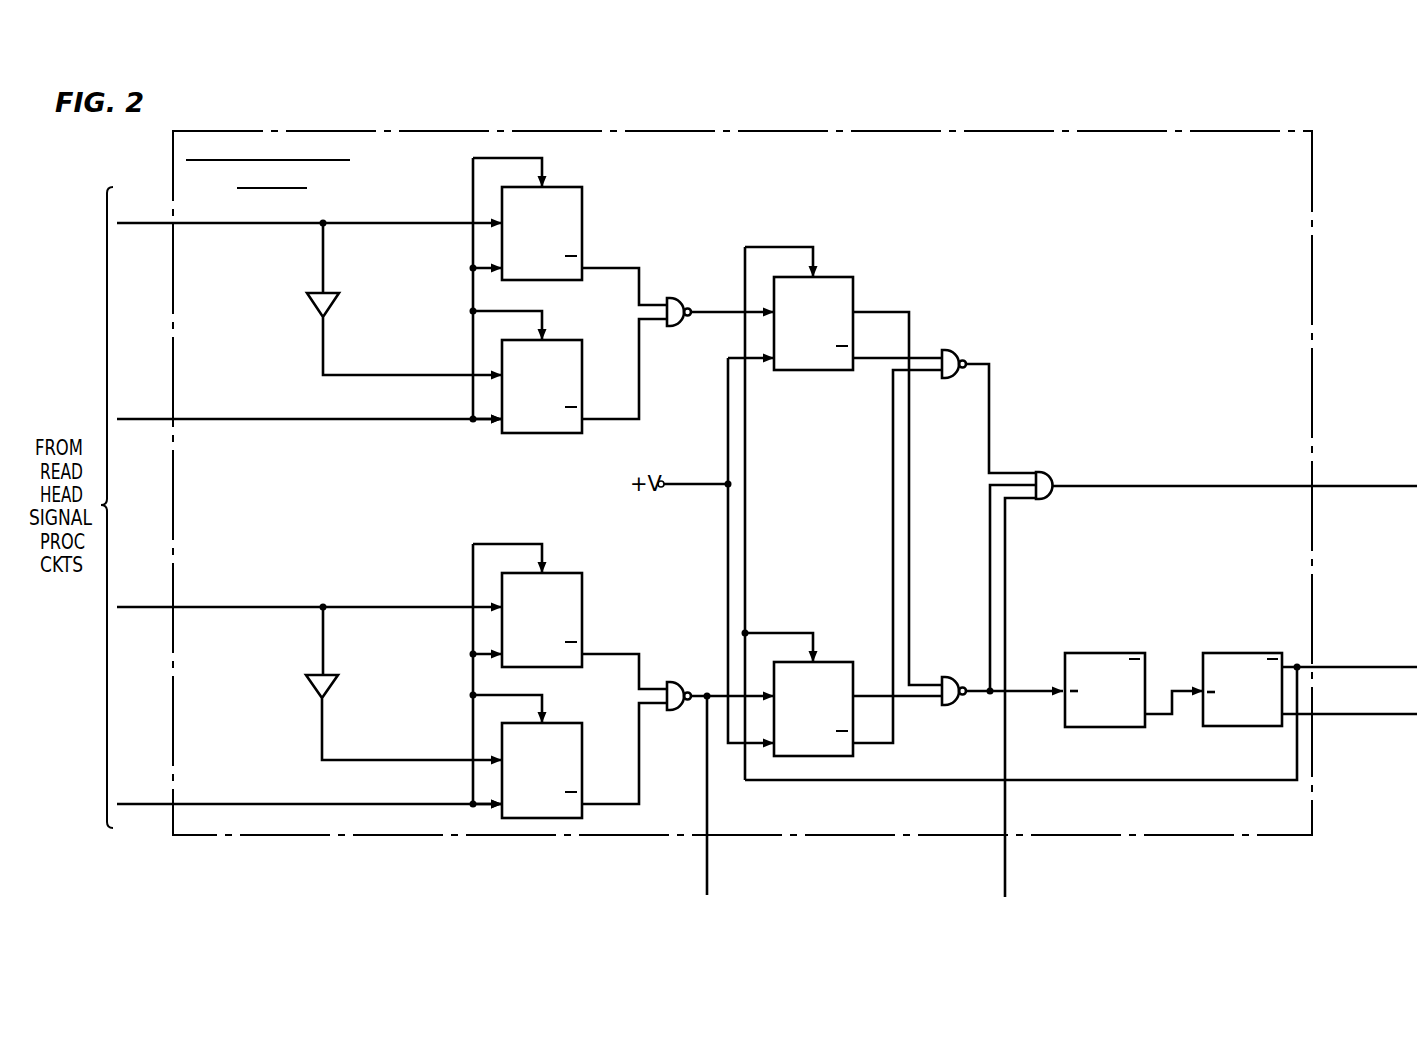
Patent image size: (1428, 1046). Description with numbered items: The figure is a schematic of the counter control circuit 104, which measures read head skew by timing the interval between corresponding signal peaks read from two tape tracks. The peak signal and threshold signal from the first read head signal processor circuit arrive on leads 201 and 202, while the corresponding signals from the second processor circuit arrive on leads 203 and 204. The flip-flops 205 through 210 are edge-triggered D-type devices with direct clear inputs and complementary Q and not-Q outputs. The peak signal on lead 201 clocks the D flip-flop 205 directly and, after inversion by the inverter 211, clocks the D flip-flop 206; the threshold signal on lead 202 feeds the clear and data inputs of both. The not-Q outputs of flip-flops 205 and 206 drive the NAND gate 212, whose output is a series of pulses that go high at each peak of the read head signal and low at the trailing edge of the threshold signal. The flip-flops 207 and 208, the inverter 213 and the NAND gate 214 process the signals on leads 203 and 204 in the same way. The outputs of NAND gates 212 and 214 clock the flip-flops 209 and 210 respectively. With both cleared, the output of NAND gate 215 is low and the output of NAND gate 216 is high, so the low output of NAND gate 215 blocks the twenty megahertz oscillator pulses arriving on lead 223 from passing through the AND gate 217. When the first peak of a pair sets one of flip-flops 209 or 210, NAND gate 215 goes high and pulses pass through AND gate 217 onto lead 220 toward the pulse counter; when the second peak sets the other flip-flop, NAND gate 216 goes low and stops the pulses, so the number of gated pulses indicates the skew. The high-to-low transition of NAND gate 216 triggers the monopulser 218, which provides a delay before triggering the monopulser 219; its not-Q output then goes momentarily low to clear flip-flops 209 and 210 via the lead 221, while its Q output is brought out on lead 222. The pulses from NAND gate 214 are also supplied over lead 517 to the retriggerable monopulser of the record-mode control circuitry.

The counter control circuit 104 is at (284, 130).
The lead 201 is at (138, 218).
The lead 202 is at (138, 416).
The input line from read head signal processing circuits 203 is at (139, 604).
The input line from read head signal processing circuits 204 is at (139, 800).
The D flip-flop 205 is at (583, 207).
The D flip-flop 206 is at (583, 352).
The flip-flop 207 is at (583, 585).
The flip-flop 208 is at (583, 742).
The D flip-flop 209 is at (838, 280).
The D flip-flop 210 is at (837, 663).
The inverter 211 is at (336, 298).
The NAND gate 212 is at (680, 297).
The inverter 213 is at (336, 681).
The NAND gate 214 is at (684, 664).
The NAND gate 215 is at (957, 348).
The NAND gate 216 is at (956, 676).
The AND gate 217 is at (1053, 472).
The monopulser 218 is at (1107, 652).
The monopulser 219 is at (1245, 652).
The lead 220 is at (1340, 485).
The lead 221 is at (1343, 665).
The output line 222 is at (1348, 703).
The lead 223 is at (1008, 853).
The lead 517 is at (710, 853).